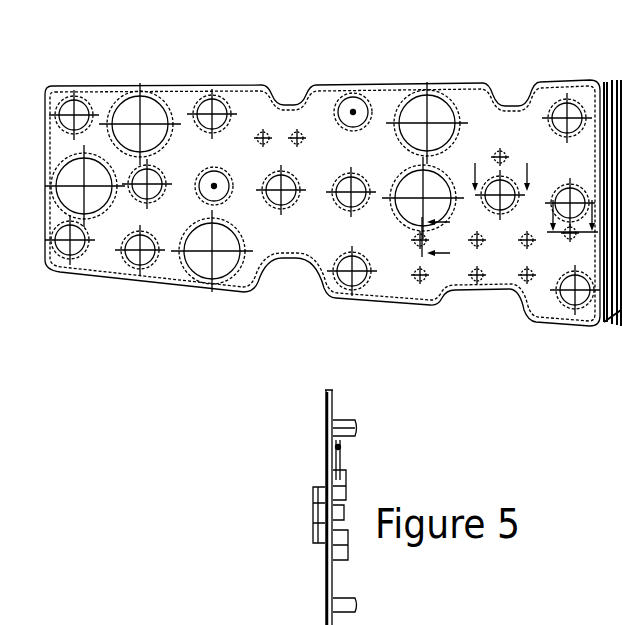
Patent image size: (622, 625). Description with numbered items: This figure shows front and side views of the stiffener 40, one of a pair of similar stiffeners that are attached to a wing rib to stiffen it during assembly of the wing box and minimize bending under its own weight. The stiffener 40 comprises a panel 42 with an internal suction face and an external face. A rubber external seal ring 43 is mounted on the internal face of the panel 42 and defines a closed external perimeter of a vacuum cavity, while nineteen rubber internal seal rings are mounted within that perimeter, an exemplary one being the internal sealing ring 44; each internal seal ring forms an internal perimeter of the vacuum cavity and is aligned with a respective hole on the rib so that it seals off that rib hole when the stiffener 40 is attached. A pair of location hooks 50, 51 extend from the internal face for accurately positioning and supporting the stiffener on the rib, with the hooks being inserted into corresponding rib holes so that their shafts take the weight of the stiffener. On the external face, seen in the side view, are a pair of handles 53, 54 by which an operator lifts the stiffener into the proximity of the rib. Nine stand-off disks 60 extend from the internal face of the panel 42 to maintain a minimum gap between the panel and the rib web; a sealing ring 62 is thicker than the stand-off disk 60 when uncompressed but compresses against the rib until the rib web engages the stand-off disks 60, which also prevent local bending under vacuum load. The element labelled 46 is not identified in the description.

The stiffener 40 is at (334, 68).
The panel 42 is at (505, 88).
The external seal ring 43 is at (246, 290).
The internal sealing ring 44 is at (192, 272).
The small aperture 46 is at (568, 238).
The location hook 50 is at (157, 185).
The location hook 51 is at (511, 206).
The handle 53 is at (350, 497).
The handle 54 is at (357, 418).
The stand-off disk 60 is at (425, 250).
The sealing ring 62 is at (407, 223).